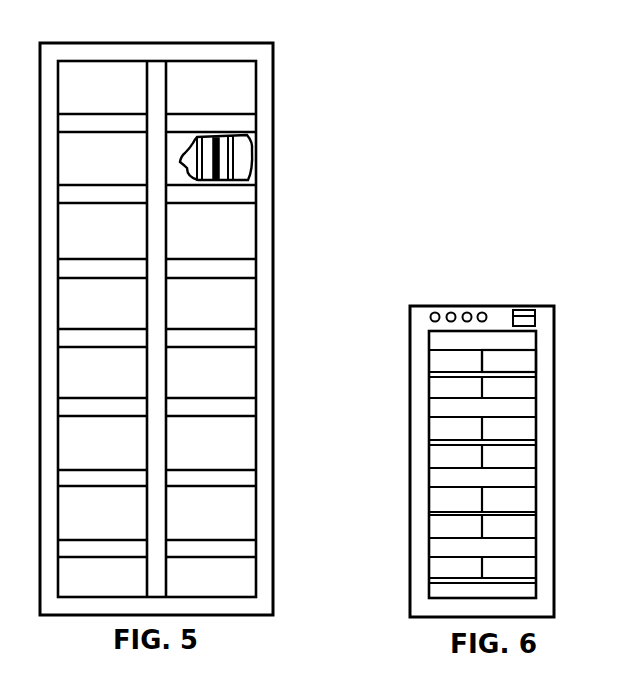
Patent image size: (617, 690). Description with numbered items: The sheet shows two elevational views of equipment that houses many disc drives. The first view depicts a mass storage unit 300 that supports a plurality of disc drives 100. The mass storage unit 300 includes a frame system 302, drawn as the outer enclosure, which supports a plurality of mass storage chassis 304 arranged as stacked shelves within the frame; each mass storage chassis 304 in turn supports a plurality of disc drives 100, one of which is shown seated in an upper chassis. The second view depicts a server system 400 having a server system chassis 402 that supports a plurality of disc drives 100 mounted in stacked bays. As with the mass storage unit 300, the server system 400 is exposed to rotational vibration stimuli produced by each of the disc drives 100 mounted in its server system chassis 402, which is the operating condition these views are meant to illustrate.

In FIG. 5, the mass storage unit 300 is at (199, 24).
In FIG. 5, the frame system 302 is at (274, 417).
In FIG. 5, the mass storage chassis 304 is at (238, 98).
In FIG. 5, the disc drive 100 is at (222, 160).
In FIG. 6, the disc drive 100 is at (513, 364).
In FIG. 6, the server system 400 is at (501, 284).
In FIG. 6, the server system chassis 402 is at (554, 455).